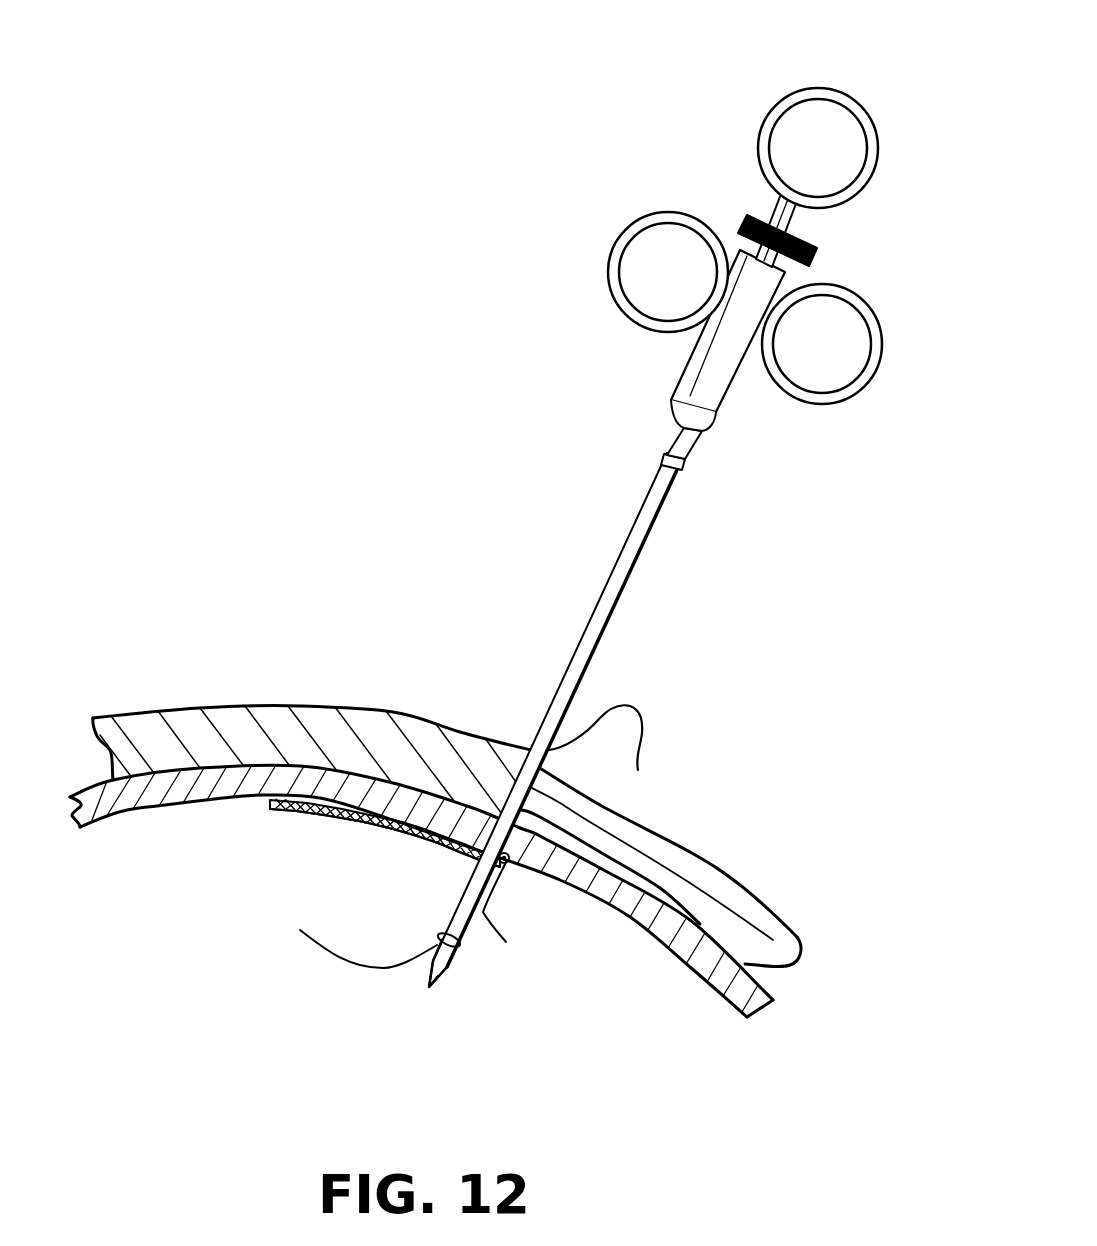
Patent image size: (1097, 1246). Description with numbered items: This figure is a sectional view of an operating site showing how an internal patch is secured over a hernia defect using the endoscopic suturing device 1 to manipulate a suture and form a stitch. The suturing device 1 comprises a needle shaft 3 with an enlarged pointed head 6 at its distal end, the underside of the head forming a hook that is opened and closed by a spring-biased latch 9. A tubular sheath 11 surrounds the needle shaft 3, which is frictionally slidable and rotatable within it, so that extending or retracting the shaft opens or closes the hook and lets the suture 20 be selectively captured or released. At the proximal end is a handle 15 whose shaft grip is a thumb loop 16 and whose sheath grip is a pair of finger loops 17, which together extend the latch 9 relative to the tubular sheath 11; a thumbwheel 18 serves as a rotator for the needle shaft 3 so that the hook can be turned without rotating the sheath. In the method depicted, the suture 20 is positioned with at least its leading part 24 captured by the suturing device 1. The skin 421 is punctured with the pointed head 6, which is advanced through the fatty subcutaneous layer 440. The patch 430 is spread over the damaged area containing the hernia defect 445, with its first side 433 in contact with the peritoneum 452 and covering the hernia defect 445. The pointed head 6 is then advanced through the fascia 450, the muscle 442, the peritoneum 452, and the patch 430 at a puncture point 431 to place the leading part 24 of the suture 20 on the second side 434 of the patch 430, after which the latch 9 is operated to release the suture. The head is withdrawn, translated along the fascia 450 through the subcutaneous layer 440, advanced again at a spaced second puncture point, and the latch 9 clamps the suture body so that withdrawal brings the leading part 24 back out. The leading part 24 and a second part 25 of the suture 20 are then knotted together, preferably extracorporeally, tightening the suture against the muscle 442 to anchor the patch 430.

The endoscopic suturing device 1 is at (627, 500).
The needle shaft 3 is at (456, 937).
The pointed head 6 is at (430, 985).
The latch 9 is at (437, 940).
The tubular sheath 11 is at (598, 605).
The handle 15 is at (793, 86).
The thumb loop 16 is at (873, 148).
The finger loops 17 is at (622, 230).
The thumbwheel 18 is at (818, 252).
The suture 20 is at (511, 914).
The leading part of the suture 24 is at (355, 967).
The second part of the suture 25 is at (649, 750).
The skin 421 is at (745, 888).
The patch 430 is at (288, 812).
The puncture point 431 is at (508, 864).
The first side of patch 433 is at (327, 817).
The second side of patch 434 is at (375, 830).
The fatty subcutaneous layer 440 is at (782, 938).
The muscle 442 is at (762, 1007).
The hernia defect 445 is at (417, 828).
The fascia 450 is at (752, 970).
The peritoneum 452 is at (680, 957).